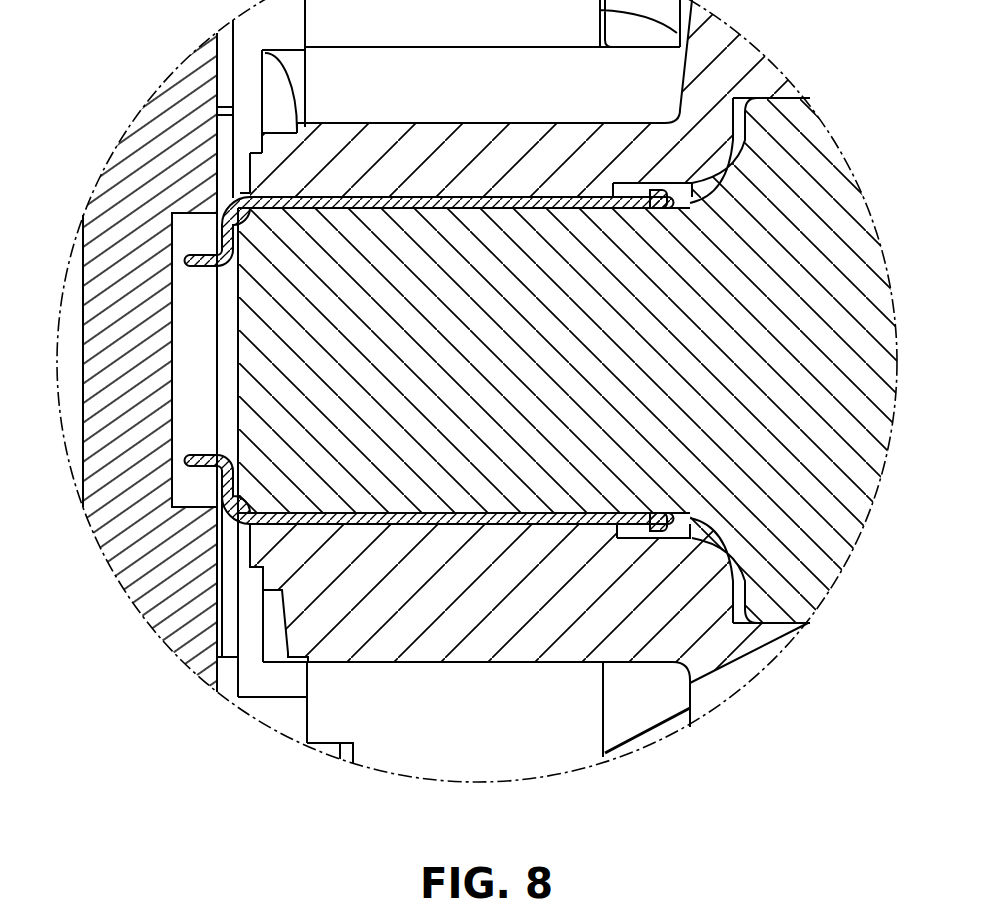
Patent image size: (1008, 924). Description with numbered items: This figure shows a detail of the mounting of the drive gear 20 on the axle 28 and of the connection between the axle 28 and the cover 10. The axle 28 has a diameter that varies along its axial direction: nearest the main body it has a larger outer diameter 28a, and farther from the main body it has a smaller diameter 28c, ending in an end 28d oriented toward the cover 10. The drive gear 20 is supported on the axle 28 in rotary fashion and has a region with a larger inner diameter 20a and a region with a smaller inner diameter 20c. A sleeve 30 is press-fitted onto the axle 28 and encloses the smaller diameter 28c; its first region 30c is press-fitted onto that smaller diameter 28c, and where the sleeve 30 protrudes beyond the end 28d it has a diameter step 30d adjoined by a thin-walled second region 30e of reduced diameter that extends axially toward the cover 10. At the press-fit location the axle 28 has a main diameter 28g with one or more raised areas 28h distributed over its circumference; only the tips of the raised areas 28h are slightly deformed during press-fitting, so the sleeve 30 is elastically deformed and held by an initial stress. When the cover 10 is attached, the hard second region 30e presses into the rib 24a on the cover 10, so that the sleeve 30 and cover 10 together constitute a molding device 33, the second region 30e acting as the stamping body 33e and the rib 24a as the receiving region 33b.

The cover 10 is at (178, 95).
The molding device 33 is at (200, 248).
The stamping body 33e is at (197, 246).
The receiving region 33b is at (190, 262).
The rib 24a is at (188, 417).
The axle 28 is at (823, 167).
The larger outer diameter 28a is at (823, 587).
The smaller diameter 28c is at (300, 213).
The raised area 28h is at (397, 213).
The end oriented toward the cover 28d is at (243, 387).
The main diameter 28g is at (473, 503).
The sleeve 30 is at (480, 200).
The first region 30c is at (563, 203).
The diameter step 30d is at (227, 490).
The second region 30e is at (213, 480).
The drive gear 20 is at (730, 680).
The larger inner diameter 20a is at (780, 625).
The smaller inner diameter 20c is at (403, 522).